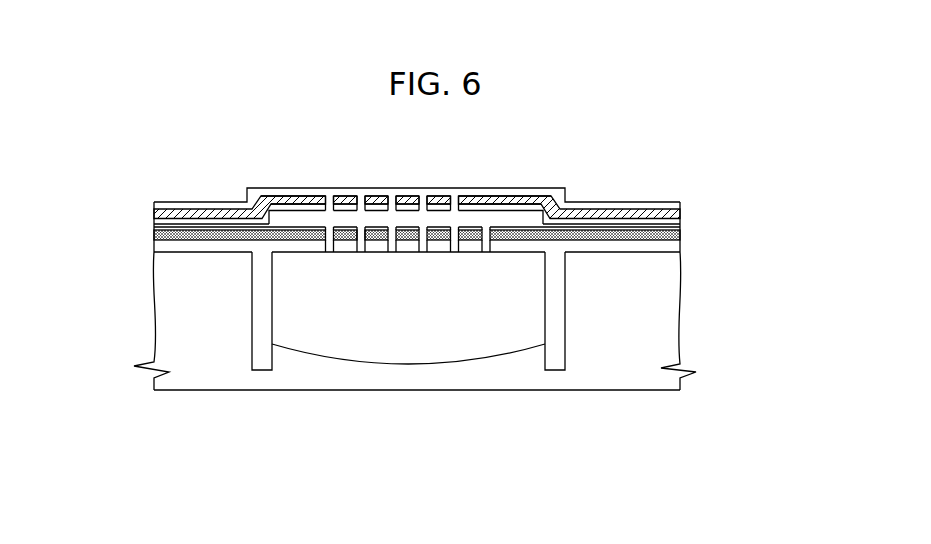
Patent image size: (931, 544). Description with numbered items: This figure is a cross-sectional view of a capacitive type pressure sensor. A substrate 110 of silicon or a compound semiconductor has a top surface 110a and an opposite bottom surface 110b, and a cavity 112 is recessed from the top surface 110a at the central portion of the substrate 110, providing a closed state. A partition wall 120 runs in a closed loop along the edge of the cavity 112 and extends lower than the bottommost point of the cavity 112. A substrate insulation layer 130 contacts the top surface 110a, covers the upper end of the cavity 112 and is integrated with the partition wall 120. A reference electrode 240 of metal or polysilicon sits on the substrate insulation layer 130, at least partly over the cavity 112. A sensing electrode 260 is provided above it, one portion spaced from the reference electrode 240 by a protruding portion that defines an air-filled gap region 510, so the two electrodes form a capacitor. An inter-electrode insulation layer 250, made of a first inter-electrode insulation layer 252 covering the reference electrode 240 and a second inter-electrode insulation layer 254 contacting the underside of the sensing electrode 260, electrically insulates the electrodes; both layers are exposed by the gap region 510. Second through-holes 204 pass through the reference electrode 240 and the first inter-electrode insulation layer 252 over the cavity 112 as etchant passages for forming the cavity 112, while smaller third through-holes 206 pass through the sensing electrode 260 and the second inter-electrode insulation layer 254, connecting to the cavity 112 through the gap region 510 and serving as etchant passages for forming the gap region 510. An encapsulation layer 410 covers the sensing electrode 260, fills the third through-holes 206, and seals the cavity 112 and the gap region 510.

The substrate 110 is at (667, 345).
The top surface 110a is at (173, 252).
The bottom surface 110b is at (170, 389).
The cavity 112 is at (419, 343).
The partition wall 120 is at (555, 313).
The substrate insulation layer 130 is at (672, 247).
The second through-hole 204 is at (364, 217).
The third through-hole 206 is at (422, 200).
The reference electrode 240 is at (676, 238).
The inter-electrode insulation layer 250 is at (476, 217).
The first inter-electrode insulation layer 252 is at (676, 226).
The second inter-electrode insulation layer 254 is at (676, 218).
The sensing electrode 260 is at (656, 204).
The encapsulation layer 410 is at (300, 189).
The gap region 510 is at (514, 222).